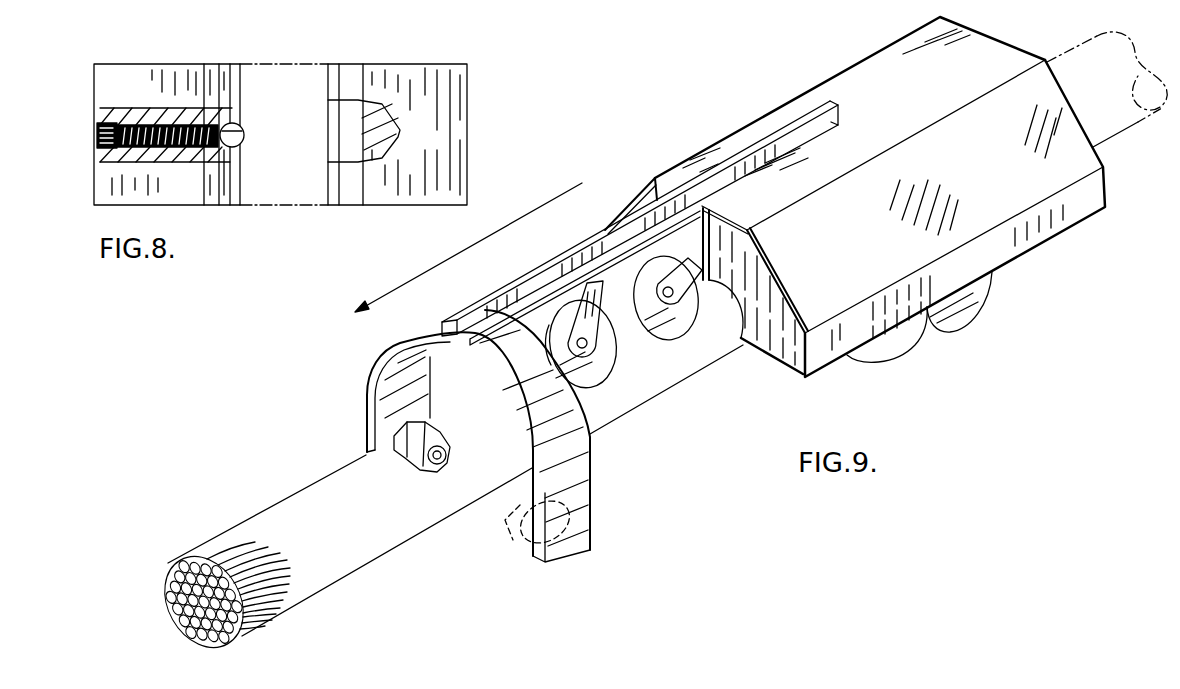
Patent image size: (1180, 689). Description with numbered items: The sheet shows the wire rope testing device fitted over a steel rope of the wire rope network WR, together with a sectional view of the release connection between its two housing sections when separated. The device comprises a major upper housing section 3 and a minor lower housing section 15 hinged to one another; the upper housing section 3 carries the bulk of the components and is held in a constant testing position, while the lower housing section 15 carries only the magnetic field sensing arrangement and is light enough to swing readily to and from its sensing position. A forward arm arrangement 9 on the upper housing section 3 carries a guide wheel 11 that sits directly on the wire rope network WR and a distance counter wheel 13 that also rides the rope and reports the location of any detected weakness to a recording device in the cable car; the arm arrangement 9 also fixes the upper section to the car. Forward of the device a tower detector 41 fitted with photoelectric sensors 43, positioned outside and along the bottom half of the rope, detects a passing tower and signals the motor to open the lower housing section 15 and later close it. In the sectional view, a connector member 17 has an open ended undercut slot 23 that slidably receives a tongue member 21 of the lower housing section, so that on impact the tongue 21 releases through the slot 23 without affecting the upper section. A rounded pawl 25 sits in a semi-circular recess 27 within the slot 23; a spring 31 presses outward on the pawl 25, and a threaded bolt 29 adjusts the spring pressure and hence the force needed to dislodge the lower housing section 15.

In FIG. 9, the upper housing section 3 is at (888, 68).
In FIG. 9, the forward arm arrangement 9 is at (577, 256).
In FIG. 9, the guide wheel 11 is at (670, 325).
In FIG. 9, the distance counter wheel 13 is at (603, 352).
In FIG. 9, the lower housing section 15 is at (932, 334).
In FIG. 8, the connector member 17 is at (432, 63).
In FIG. 8, the tongue member 21 is at (230, 70).
In FIG. 8, the undercut slot 23 is at (350, 107).
In FIG. 8, the rounded pawl 25 is at (241, 129).
In FIG. 8, the semi-circular recess 27 is at (336, 139).
In FIG. 8, the threaded bolt 29 is at (97, 136).
In FIG. 8, the spring 31 is at (242, 146).
In FIG. 9, the tower detector 41 is at (590, 534).
In FIG. 9, the photoelectric sensors 43 is at (410, 459).
In FIG. 9, the wire rope network WR is at (639, 399).